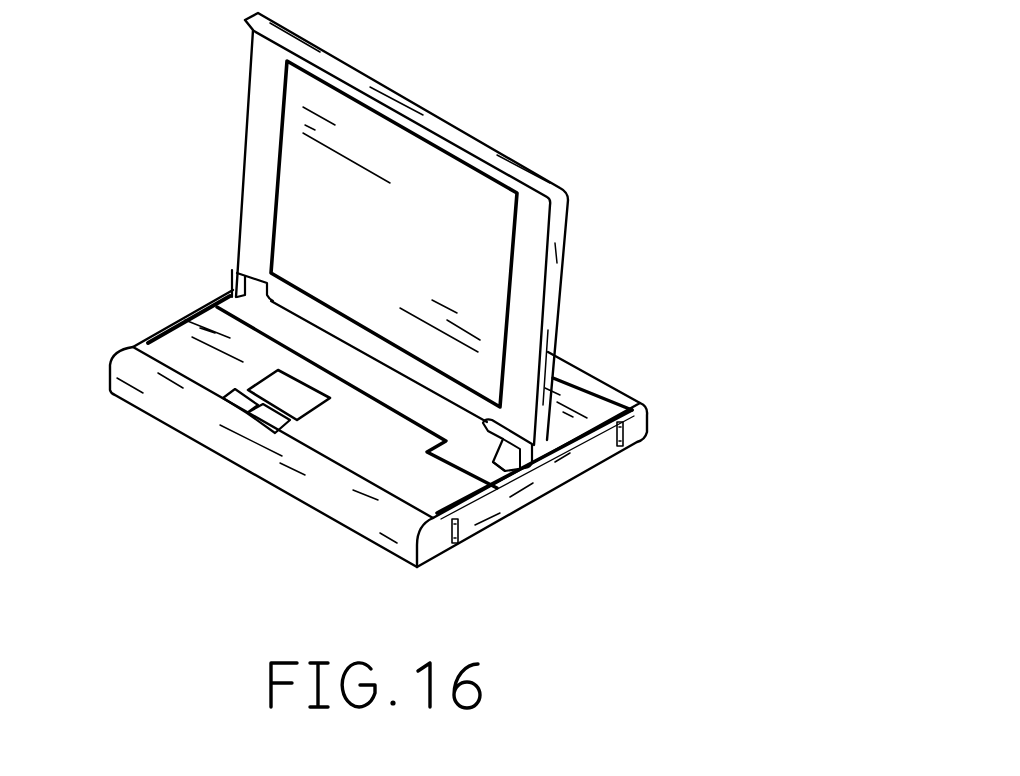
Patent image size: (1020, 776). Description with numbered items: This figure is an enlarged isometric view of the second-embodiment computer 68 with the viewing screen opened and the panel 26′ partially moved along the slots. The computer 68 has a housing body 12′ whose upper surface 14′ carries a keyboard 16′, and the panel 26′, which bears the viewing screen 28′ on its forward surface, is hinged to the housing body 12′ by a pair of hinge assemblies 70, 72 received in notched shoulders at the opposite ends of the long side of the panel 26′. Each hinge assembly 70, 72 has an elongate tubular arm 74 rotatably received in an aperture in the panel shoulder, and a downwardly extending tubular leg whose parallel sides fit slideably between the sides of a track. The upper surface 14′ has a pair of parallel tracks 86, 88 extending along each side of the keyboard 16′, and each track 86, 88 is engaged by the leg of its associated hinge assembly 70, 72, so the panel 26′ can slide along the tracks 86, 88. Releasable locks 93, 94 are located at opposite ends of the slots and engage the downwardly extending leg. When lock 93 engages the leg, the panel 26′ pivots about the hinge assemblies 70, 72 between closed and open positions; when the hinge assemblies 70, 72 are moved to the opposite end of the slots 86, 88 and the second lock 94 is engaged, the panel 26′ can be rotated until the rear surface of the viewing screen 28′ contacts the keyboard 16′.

The computer 68 is at (478, 222).
The panel 26′ is at (562, 218).
The viewing screen 28′ is at (493, 300).
The hinge assembly 72 is at (233, 273).
The track 88 is at (187, 320).
The upper surface 14′ is at (188, 367).
The housing body 12′ is at (253, 475).
The keyboard 16′ is at (393, 405).
The lock 94 is at (455, 545).
The track 86 is at (467, 503).
The tubular arm 74 is at (508, 478).
The hinge assembly 70 is at (540, 453).
The lock 93 is at (625, 440).